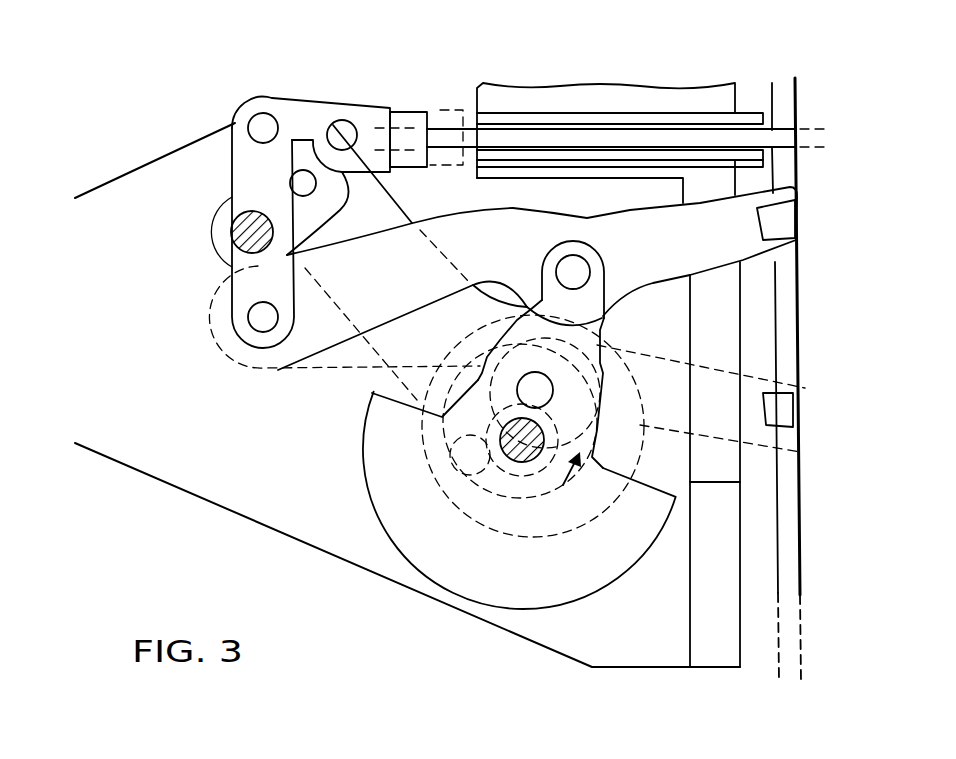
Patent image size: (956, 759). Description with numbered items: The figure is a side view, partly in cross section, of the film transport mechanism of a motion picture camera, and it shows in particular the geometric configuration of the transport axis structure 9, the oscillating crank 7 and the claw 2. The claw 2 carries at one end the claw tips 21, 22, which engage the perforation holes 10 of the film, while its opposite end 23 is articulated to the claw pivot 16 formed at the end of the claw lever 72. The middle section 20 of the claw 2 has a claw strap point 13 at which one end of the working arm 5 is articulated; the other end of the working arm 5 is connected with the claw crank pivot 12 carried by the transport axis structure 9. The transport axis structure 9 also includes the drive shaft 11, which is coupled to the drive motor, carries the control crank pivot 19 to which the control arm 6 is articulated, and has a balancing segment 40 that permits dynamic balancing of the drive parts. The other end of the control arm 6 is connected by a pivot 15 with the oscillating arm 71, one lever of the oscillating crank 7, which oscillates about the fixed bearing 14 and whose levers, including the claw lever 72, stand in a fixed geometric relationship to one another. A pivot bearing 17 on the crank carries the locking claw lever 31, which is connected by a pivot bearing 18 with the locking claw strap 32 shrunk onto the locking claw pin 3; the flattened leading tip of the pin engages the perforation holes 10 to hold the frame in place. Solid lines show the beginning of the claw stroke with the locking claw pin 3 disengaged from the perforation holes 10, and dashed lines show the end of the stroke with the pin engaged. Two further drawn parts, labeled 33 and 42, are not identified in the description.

The locking claw pin 3 is at (498, 72).
The locking claw lever 31 is at (303, 113).
The pivot bearing 18 is at (344, 133).
The locking claw strap 32 is at (413, 112).
The guide housing 33 is at (612, 130).
The pivot bearing 17 is at (250, 124).
The oscillating crank 7 is at (240, 178).
The control arm 6 is at (392, 197).
The pivot 15 is at (310, 184).
The fixed bearing 14 is at (235, 240).
The oscillating arm 71 is at (300, 230).
The claw lever 72 is at (238, 302).
The claw pivot 16 is at (267, 325).
The end of claw 23 is at (300, 345).
The middle section 20 is at (520, 232).
The claw strap point 13 is at (575, 272).
The claw 2 is at (730, 247).
The claw tip 22 is at (798, 191).
The claw tip 21 is at (798, 242).
The working arm 5 is at (582, 330).
The tooth 42 is at (466, 402).
The balancing segment 40 is at (478, 590).
The claw crank pivot 12 is at (568, 380).
The drive shaft 11 is at (520, 463).
The transport axis structure 9 is at (593, 581).
The control crank pivot 19 is at (578, 425).
The perforation holes 10 is at (803, 508).